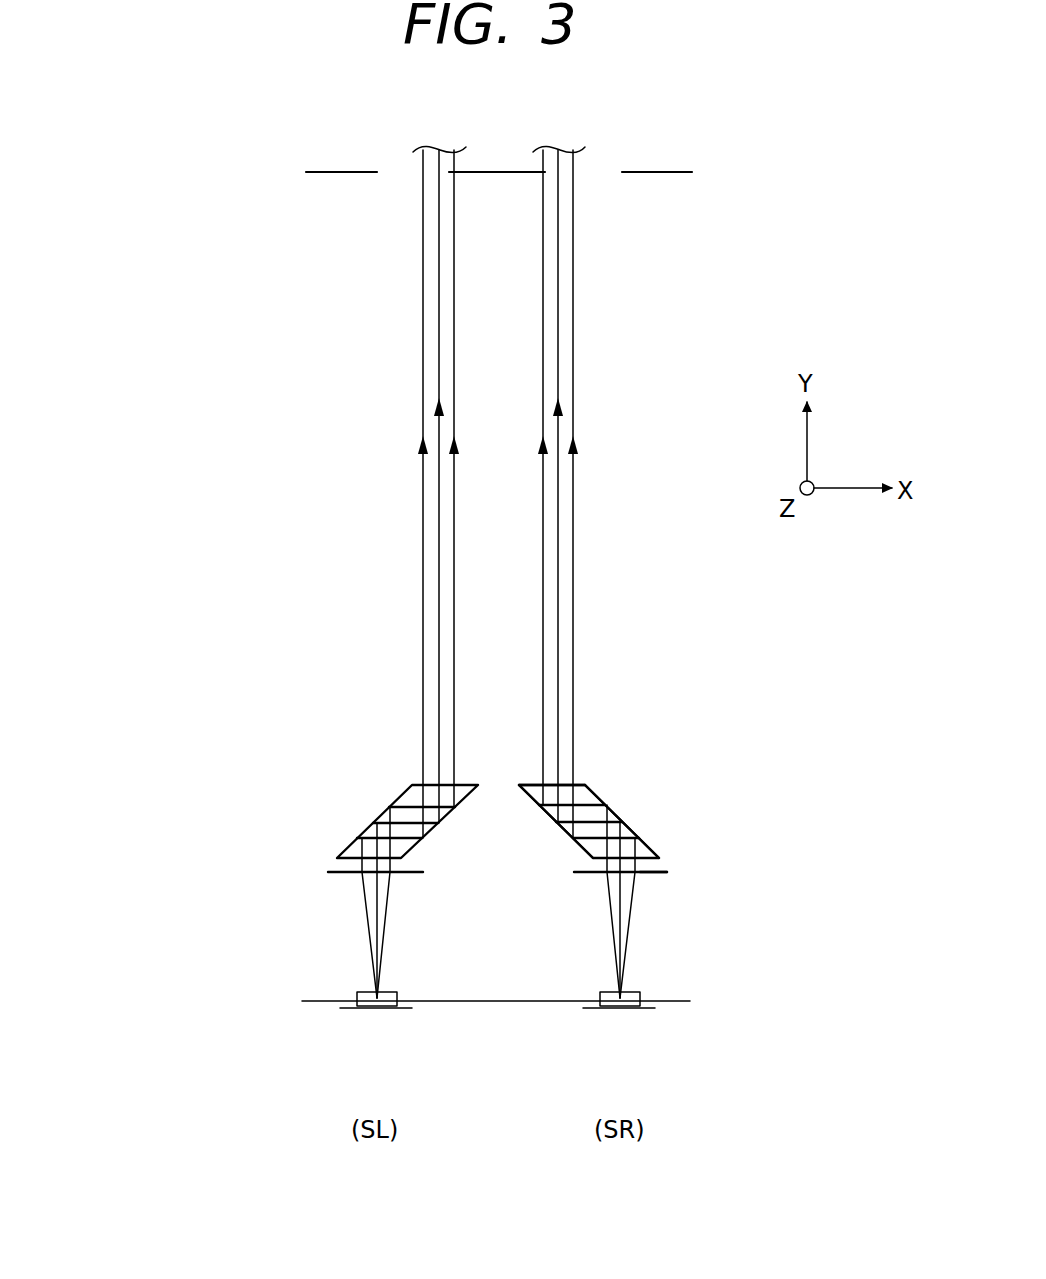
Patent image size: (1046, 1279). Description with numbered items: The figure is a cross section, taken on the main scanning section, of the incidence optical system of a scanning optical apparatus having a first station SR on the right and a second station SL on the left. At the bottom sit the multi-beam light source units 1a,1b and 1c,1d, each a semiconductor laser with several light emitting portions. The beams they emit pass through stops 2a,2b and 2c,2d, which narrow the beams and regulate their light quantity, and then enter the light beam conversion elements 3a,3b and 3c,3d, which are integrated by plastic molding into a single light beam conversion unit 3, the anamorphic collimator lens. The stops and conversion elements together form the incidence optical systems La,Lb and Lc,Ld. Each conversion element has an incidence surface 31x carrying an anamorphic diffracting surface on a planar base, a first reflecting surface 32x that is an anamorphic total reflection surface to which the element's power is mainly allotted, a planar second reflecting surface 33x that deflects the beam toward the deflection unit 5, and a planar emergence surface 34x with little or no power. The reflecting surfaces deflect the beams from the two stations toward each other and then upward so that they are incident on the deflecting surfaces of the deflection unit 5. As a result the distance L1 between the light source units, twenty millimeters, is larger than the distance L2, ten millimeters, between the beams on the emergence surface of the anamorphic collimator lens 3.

The deflection unit 5 is at (500, 172).
The light beam conversion unit 3 is at (682, 718).
The emergence surface 34x is at (582, 780).
The first reflecting surface 32x is at (623, 812).
The second reflecting surface 33x is at (555, 826).
The incidence surface 31x is at (652, 871).
The light beam conversion elements 3a,3b is at (631, 828).
The stops 2a,2b is at (644, 876).
The light beam conversion elements 3c,3d is at (365, 832).
The stops 2c,2d is at (345, 873).
The light source units 1a,1b is at (628, 1003).
The light source units 1c,1d is at (370, 1003).
The incidence optical systems La,Lb is at (873, 868).
The incidence optical systems Lc,Ld is at (180, 869).
The distance between light source units L1 is at (620, 1006).
The distance between light beams L2 is at (556, 638).